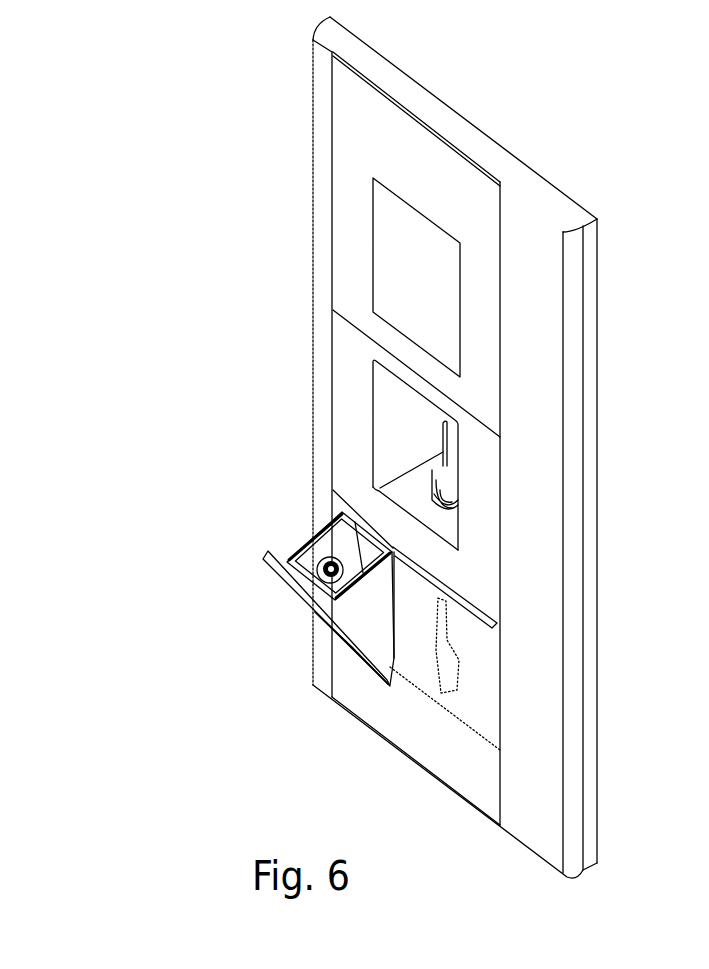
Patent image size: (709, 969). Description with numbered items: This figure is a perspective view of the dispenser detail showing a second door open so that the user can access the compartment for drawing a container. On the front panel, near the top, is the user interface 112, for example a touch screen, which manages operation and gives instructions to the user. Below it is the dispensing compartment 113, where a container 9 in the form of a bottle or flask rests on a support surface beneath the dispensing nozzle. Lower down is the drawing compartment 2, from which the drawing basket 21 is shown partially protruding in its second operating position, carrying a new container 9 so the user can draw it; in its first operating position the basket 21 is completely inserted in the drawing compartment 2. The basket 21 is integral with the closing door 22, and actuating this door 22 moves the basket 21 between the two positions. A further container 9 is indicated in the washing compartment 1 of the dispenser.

The washing compartment 1 is at (481, 688).
The drawing compartment 2 is at (400, 634).
The container 9 is at (322, 556).
The drawing basket 21 is at (336, 530).
The closing door 22 is at (317, 615).
The user interface 112 is at (397, 238).
The dispensing compartment 113 is at (395, 428).